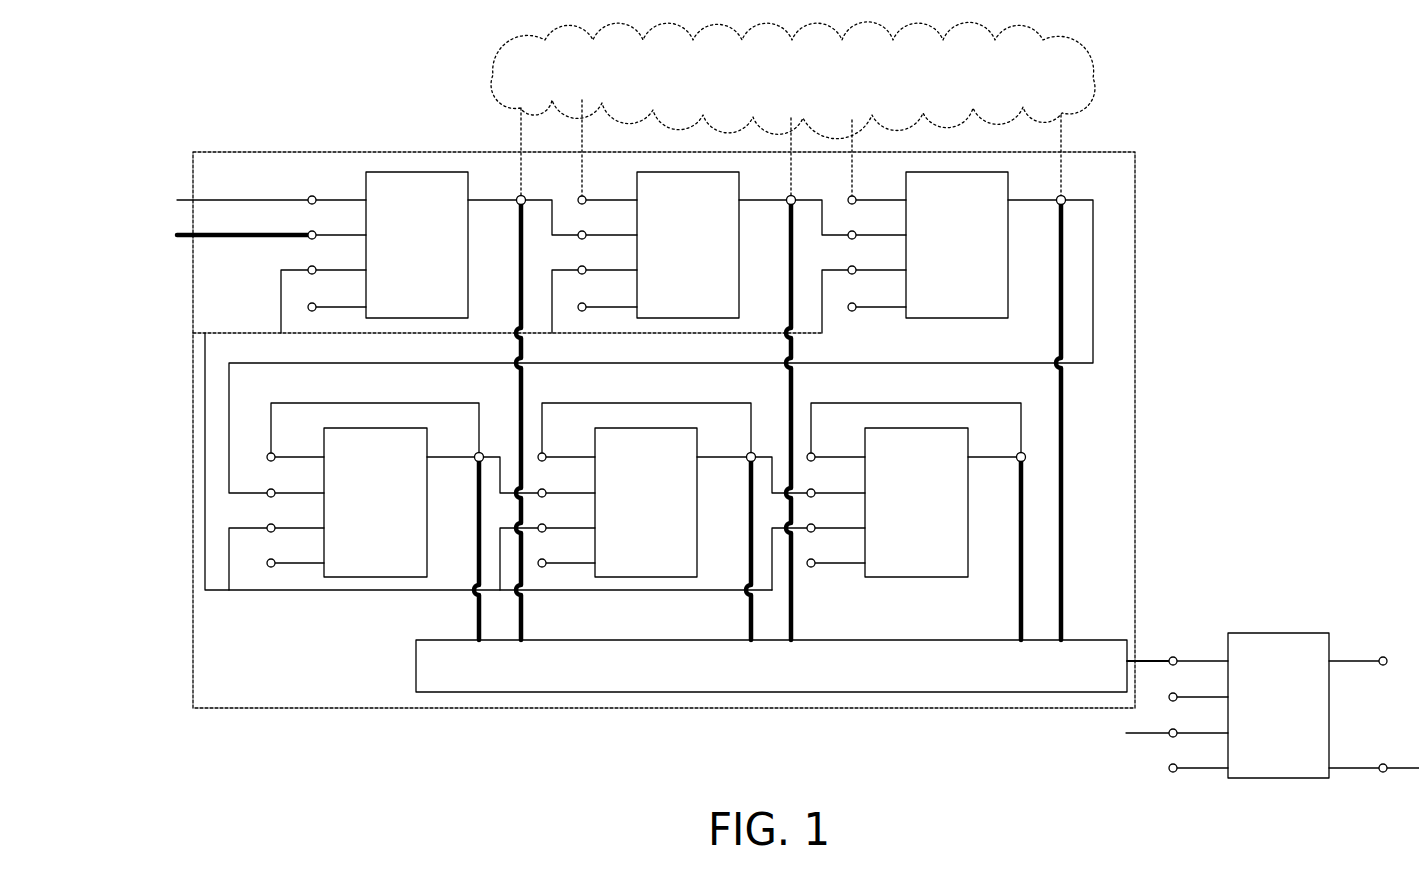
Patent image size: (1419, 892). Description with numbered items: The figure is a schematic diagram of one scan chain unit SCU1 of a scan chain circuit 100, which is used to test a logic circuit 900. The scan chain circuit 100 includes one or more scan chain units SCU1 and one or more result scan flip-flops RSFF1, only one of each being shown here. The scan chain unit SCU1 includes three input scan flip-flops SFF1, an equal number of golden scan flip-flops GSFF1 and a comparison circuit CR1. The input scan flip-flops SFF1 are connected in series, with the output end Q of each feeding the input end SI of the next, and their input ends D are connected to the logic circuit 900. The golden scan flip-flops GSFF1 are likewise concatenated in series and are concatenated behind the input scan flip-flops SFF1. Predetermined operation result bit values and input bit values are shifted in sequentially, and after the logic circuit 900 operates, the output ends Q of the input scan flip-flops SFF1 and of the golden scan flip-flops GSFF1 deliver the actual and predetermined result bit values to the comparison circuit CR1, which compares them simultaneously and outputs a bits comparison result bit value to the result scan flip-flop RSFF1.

The logic circuit 900 is at (887, 88).
The scan chain circuit 100 is at (1355, 483).
The scan chain unit SCU1 is at (1135, 500).
The result scan flip-flop RSFF1 is at (1247, 633).
The comparison circuit CR1 is at (900, 677).
The input scan flip-flop SFF1 is at (446, 272).
The golden scan flip-flop GSFF1 is at (411, 543).